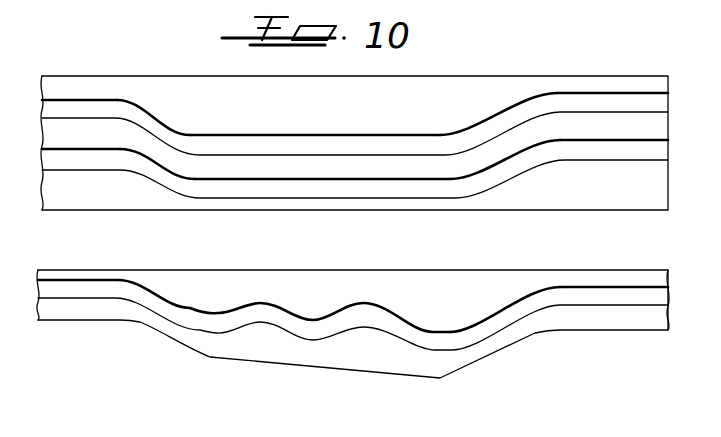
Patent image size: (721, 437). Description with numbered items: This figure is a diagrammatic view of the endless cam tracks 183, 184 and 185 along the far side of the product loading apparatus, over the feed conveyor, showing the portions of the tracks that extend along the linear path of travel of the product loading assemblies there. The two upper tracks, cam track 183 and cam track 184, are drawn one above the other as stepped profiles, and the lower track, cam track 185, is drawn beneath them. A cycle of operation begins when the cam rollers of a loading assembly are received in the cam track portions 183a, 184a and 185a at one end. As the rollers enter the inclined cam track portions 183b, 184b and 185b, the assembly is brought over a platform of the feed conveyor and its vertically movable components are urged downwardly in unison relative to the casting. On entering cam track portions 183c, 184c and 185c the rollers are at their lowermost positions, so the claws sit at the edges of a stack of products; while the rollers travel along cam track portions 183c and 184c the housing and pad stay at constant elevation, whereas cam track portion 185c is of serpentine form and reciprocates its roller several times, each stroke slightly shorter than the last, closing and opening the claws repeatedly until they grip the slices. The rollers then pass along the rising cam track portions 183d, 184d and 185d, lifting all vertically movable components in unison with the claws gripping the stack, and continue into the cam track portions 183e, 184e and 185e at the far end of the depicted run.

The upper sheet member 183 is at (362, 147).
The right end portion of upper sheet 183a is at (645, 100).
The right inclined portion of upper sheet 183b is at (528, 110).
The central portion of upper sheet 183c is at (297, 138).
The left inclined portion of upper sheet 183d is at (147, 125).
The left end portion of upper sheet 183e is at (54, 104).
The lower sheet member 184 is at (378, 188).
The right end portion of lower sheet 184a is at (637, 152).
The right inclined portion of lower sheet 184b is at (498, 167).
The central portion of lower sheet 184c is at (263, 190).
The left inclined portion of lower sheet 184d is at (152, 172).
The left end portion of lower sheet 184e is at (65, 160).
The corrugated sheet member 185 is at (453, 337).
The right end portion of corrugated sheet 185a is at (663, 284).
The right inclined portion of corrugated sheet 185b is at (497, 323).
The corrugated central section 185c is at (437, 387).
The left inclined portion of corrugated sheet 185d is at (162, 308).
The left end portion of corrugated sheet 185e is at (77, 289).